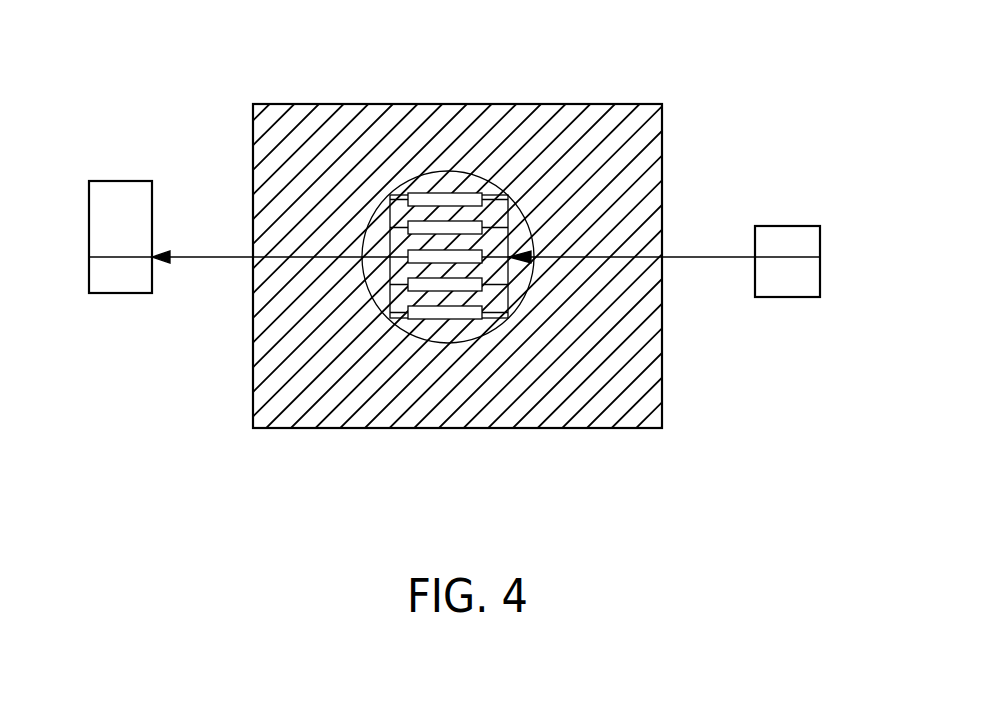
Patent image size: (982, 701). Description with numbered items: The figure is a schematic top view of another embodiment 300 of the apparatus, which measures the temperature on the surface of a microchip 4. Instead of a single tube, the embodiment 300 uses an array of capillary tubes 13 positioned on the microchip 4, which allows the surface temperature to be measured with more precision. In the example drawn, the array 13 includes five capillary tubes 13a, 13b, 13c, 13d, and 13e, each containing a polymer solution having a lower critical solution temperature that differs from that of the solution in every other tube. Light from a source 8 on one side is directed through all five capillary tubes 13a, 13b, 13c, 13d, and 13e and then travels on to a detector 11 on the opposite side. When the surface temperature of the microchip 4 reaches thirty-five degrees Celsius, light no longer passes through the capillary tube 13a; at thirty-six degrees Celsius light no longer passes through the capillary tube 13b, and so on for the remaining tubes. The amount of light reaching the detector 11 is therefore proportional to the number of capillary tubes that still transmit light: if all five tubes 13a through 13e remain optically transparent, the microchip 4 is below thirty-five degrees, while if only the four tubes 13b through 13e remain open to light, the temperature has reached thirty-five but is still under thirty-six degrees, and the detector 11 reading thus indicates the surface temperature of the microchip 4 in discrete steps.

The microchip 4 is at (621, 352).
The light source 8 is at (820, 257).
The detector 11 is at (90, 256).
The array of capillary tubes 13 is at (508, 196).
The capillary tube 13a is at (424, 195).
The capillary tube 13b is at (433, 197).
The capillary tube 13c is at (413, 257).
The capillary tube 13d is at (480, 283).
The capillary tube 13e is at (430, 312).
The embodiment of the apparatus 300 is at (170, 420).